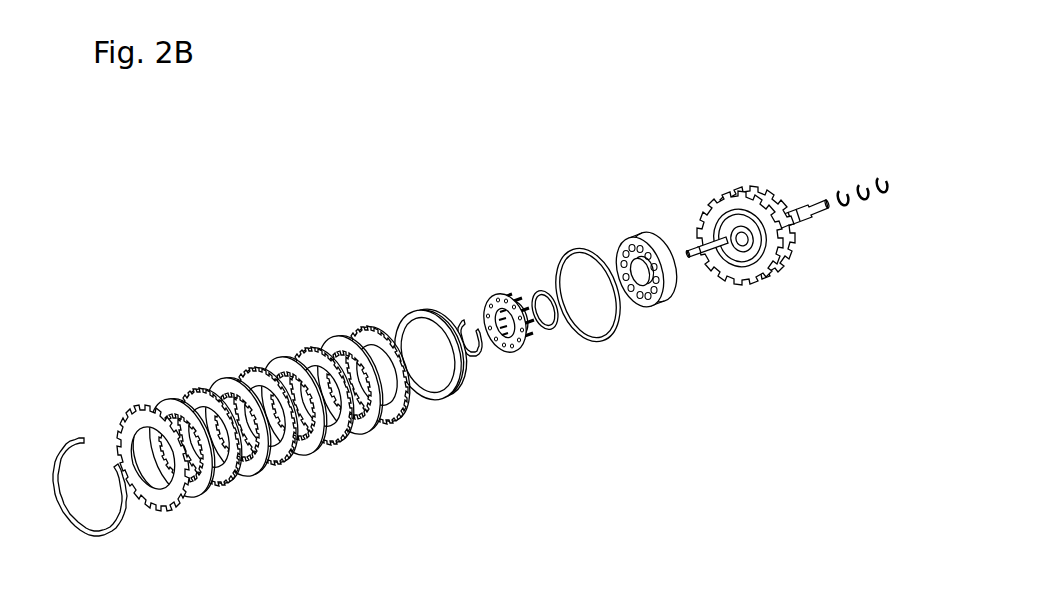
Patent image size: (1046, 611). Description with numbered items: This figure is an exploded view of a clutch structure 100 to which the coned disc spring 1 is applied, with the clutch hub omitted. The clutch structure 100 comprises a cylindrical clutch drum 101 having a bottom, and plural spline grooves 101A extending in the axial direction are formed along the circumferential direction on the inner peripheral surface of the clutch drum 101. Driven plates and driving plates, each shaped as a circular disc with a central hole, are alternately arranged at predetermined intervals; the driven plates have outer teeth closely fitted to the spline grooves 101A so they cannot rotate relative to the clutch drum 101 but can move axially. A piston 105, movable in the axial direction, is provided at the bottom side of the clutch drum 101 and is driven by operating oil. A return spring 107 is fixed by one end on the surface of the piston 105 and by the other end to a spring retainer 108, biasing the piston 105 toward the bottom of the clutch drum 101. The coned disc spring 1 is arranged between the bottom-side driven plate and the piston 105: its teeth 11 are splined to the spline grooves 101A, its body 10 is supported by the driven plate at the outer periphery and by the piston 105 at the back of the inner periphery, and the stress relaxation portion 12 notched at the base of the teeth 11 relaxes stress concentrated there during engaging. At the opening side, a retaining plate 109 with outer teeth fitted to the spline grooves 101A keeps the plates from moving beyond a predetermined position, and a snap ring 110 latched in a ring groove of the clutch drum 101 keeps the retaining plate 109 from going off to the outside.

The coned disc spring 1 is at (472, 245).
The body 10 is at (428, 307).
The teeth 11 is at (418, 308).
The stress relaxation portion 12 is at (413, 308).
The clutch structure 100 is at (603, 158).
The clutch drum 101 is at (731, 193).
The spline grooves 101A is at (698, 222).
The piston 105 is at (668, 312).
The return spring 107 is at (517, 294).
The spring retainer 108 is at (517, 356).
The retaining plate 109 is at (137, 405).
The snap ring 110 is at (97, 435).